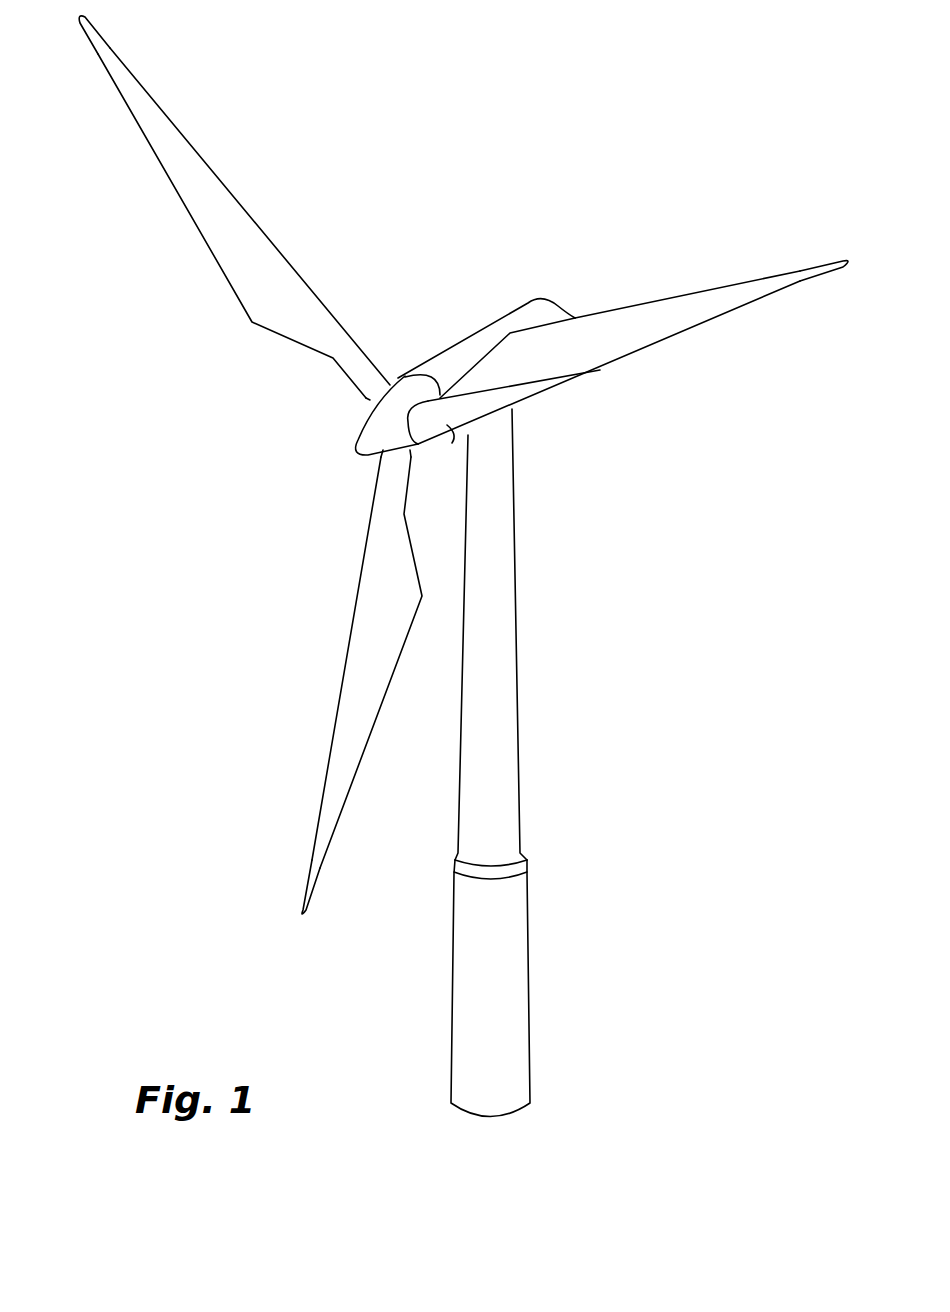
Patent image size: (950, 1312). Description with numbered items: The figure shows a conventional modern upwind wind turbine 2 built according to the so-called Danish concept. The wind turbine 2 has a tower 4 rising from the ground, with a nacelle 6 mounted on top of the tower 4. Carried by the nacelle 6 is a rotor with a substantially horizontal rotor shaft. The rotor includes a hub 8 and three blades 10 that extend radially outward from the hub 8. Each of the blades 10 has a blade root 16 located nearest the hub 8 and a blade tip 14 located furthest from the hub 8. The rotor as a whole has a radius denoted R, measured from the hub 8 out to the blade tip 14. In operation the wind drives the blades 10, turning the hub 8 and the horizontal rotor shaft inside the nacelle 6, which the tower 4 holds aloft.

The wind turbine 2 is at (605, 708).
The tower 4 is at (507, 635).
The nacelle 6 is at (460, 357).
The hub 8 is at (368, 437).
The blade 10 is at (268, 297).
The blade tip 14 is at (118, 73).
The blade root 16 is at (380, 390).